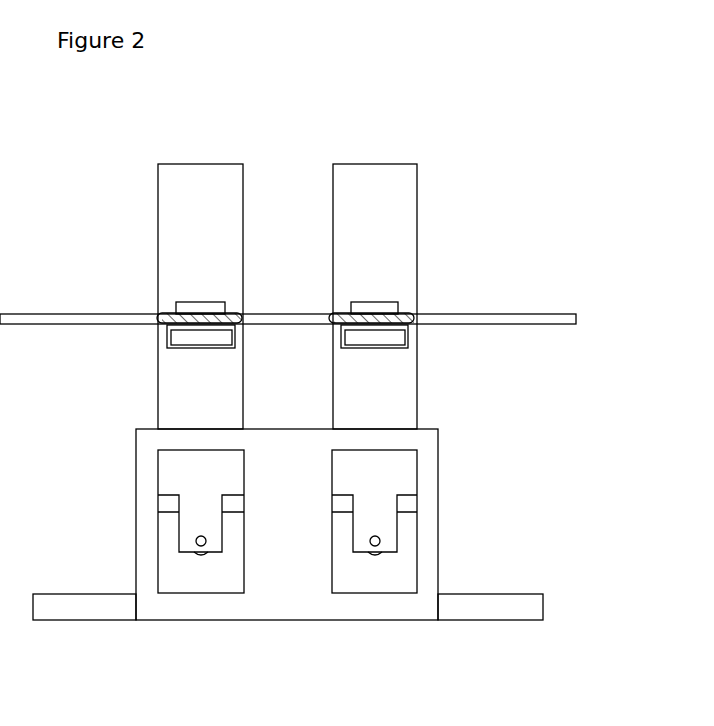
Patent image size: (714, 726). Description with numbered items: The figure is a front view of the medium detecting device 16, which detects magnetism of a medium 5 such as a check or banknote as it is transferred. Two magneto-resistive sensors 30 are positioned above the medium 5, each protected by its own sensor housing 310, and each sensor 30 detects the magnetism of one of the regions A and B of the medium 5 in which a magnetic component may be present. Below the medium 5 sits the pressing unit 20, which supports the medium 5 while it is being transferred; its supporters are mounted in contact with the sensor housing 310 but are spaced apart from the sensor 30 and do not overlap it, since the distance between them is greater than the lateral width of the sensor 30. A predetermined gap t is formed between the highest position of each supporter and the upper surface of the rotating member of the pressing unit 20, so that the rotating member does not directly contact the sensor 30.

The medium detecting device 16 is at (114, 101).
The sensor housing 310 is at (417, 230).
The magneto-resistive (MR) sensor 30 is at (385, 303).
The medium 5 is at (561, 318).
The pressing unit 20 is at (395, 629).
The region A of the medium A is at (215, 320).
The region B of the medium B is at (398, 327).
The predetermined gap t is at (140, 297).